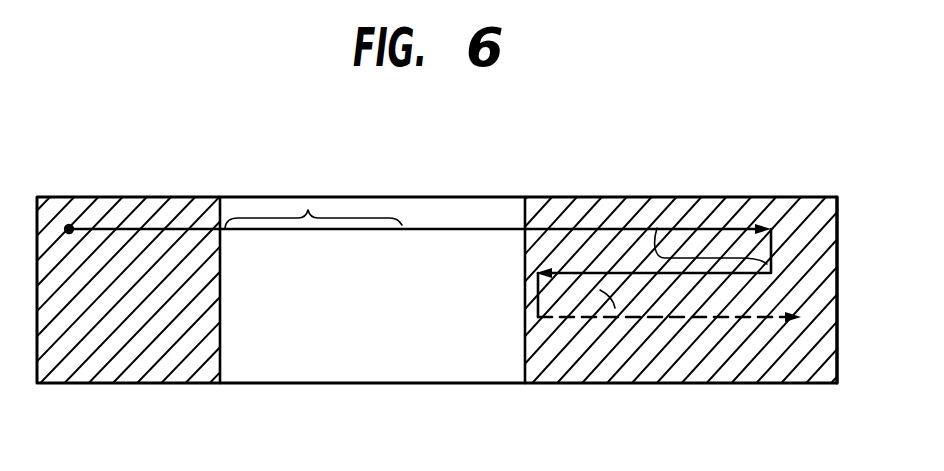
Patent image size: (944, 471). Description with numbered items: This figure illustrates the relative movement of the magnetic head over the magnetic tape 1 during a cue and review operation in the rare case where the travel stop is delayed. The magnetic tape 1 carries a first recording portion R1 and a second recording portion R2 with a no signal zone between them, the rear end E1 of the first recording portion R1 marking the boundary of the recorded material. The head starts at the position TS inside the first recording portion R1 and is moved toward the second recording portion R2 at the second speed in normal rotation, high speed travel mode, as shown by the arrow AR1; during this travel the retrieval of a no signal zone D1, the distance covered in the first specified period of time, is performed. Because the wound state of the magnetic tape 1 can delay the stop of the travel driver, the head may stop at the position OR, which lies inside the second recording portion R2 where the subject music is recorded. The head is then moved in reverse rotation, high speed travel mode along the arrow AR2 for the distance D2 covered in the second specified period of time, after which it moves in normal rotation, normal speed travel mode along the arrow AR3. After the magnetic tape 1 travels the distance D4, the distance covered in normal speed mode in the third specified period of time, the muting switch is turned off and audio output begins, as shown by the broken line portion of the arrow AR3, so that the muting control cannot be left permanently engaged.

The magnetic tape 1 is at (575, 198).
The first recording portion R1 is at (147, 372).
The second recording portion R2 is at (697, 377).
The rear end of the first recording portion E1 is at (220, 355).
The head position at start TS is at (70, 226).
The arrow AR1 is at (447, 228).
The arrow AR2 is at (536, 294).
The arrow AR3 is at (585, 275).
The no signal zone distance D1 is at (308, 210).
The distance D2 is at (657, 228).
The distance D4 is at (543, 311).
The stop position OR is at (807, 198).